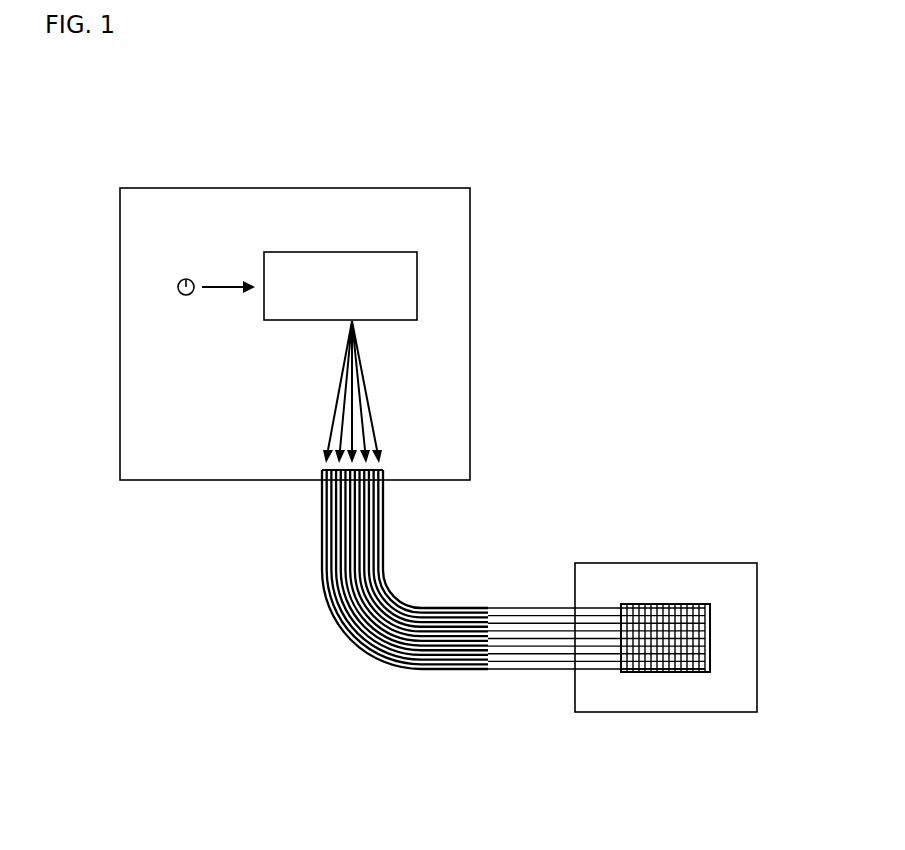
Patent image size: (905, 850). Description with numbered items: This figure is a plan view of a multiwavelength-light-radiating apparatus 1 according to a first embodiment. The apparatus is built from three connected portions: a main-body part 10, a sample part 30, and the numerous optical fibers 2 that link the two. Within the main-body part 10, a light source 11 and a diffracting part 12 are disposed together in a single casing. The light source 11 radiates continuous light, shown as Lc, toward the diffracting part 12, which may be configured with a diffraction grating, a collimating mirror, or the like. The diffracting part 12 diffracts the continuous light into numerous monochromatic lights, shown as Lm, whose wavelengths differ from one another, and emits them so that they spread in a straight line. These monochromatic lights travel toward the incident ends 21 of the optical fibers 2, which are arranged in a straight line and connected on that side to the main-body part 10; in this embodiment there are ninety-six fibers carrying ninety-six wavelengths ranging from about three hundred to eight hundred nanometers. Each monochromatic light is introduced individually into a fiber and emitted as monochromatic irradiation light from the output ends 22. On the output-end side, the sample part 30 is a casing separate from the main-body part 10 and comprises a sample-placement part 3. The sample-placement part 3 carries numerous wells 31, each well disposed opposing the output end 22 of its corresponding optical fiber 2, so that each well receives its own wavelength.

The multiwavelength-light-radiating apparatus 1 is at (566, 157).
The main-body part 10 is at (306, 187).
The light source 11 is at (187, 278).
The diffracting part 12 is at (358, 272).
The optical fibers 2 is at (322, 525).
The incident ends 21 is at (323, 466).
The output ends 22 is at (633, 665).
The sample-placement part 3 is at (665, 606).
The sample part 30 is at (729, 698).
The wells 31 is at (707, 628).